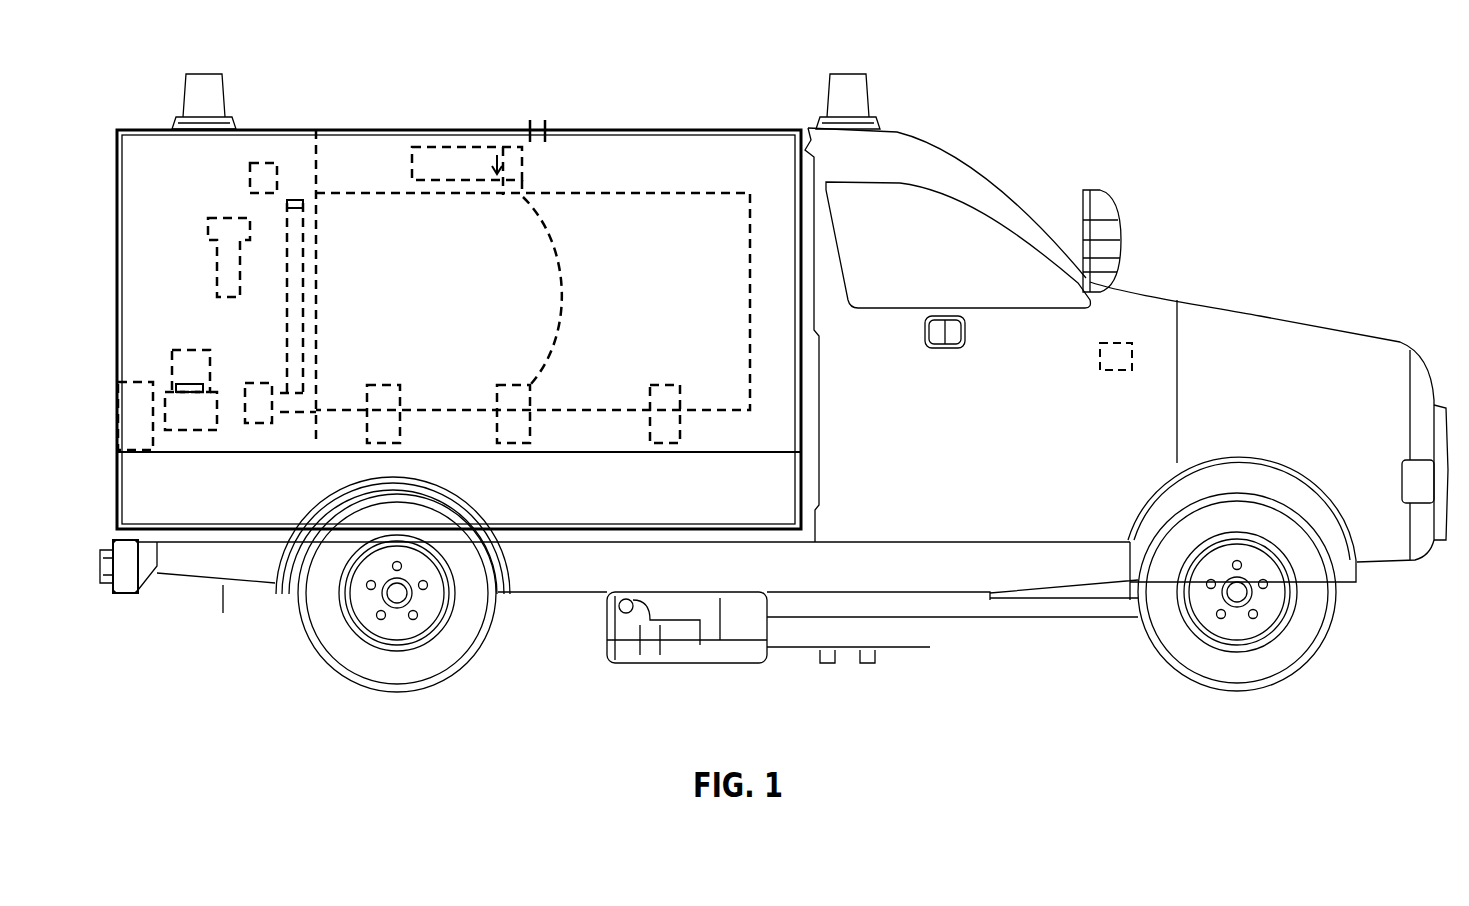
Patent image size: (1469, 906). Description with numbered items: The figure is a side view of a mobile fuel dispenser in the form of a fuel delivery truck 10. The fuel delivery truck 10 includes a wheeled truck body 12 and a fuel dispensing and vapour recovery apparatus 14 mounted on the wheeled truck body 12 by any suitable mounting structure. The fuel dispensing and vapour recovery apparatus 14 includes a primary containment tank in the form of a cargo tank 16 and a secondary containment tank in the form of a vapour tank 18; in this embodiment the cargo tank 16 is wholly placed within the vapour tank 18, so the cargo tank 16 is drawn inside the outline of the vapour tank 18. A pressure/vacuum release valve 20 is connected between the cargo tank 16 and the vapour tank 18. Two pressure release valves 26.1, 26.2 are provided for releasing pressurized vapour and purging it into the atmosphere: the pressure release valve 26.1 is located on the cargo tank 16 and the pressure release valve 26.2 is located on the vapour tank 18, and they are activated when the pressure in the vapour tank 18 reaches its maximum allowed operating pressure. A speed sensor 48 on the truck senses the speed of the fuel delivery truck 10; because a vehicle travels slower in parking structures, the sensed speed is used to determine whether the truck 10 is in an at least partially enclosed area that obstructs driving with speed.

The fuel delivery truck 10 is at (1205, 197).
The wheeled truck body 12 is at (1392, 548).
The fuel dispensing and vapour recovery apparatus 14 is at (638, 167).
The cargo tank 16 is at (713, 193).
The vapour tank 18 is at (330, 130).
The pressure/vacuum release valve 20 is at (422, 147).
The pressure release valve 26.1 is at (502, 140).
The pressure release valve 26.2 is at (553, 109).
The speed sensor 48 is at (1136, 352).